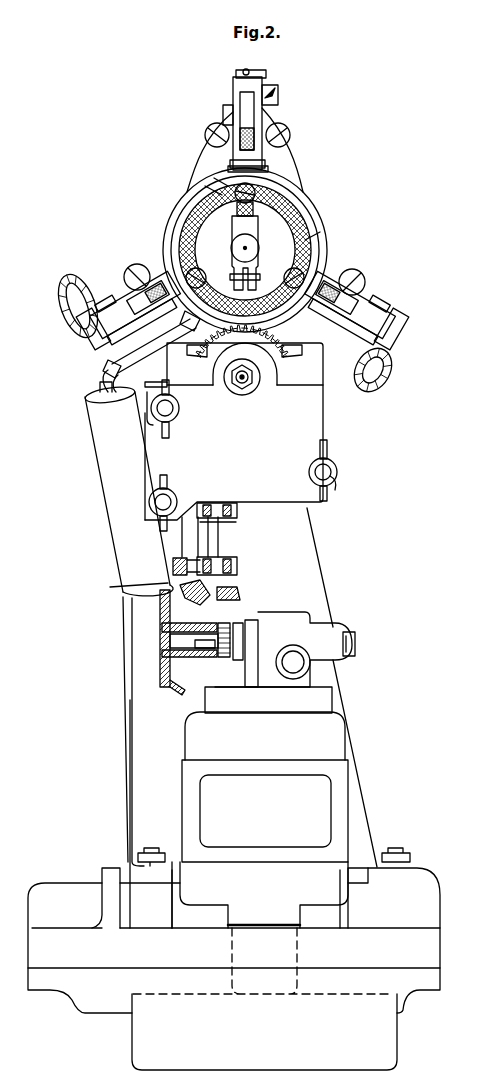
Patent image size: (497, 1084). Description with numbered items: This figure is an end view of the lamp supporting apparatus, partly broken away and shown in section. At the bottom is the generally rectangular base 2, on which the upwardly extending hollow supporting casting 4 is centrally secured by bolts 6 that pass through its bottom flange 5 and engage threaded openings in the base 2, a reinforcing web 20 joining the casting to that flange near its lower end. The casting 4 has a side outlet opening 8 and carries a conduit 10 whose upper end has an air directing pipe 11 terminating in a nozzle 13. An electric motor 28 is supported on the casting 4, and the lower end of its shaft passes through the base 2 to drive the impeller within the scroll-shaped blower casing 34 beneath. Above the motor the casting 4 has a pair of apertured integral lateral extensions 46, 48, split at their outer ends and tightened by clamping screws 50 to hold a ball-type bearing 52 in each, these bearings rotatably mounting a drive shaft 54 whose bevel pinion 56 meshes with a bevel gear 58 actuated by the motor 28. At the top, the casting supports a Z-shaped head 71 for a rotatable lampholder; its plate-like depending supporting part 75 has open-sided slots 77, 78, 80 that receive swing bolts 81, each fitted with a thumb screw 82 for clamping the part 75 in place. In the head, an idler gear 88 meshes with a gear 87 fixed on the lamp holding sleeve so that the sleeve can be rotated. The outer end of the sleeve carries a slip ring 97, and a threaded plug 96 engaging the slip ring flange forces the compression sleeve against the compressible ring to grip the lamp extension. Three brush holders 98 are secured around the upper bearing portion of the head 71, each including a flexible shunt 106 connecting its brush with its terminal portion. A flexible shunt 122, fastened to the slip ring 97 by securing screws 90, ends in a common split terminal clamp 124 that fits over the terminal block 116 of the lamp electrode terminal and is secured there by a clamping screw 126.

The base 2 is at (55, 888).
The hollow supporting casting 4 is at (337, 600).
The bottom flange 5 is at (125, 870).
The bolts 6 is at (157, 852).
The side outlet opening 8 is at (117, 589).
The conduit 10 is at (107, 487).
The air directing pipe 11 is at (148, 356).
The nozzle 13 is at (211, 302).
The reinforcing web 20 is at (128, 781).
The electric motor 28 is at (343, 788).
The scroll-shaped blower casing 34 is at (390, 1036).
The lateral extension 46 is at (230, 559).
The lateral extension 48 is at (222, 522).
The clamping screws 50 is at (242, 511).
The bearing 52 is at (180, 555).
The drive shaft 54 is at (215, 541).
The bevel pinion 56 is at (238, 596).
The bevel gear 58 is at (163, 610).
The head 71 is at (304, 153).
The depending supporting part 75 is at (308, 403).
The open-sided slot 77 is at (161, 423).
The open-sided slot 78 is at (150, 521).
The open-sided slot 80 is at (333, 481).
The swing bolts 81 is at (179, 408).
The thumb screw 82 is at (170, 428).
The gear 87 is at (316, 231).
The idler gear 88 is at (268, 346).
The securing screws 90 is at (262, 188).
The threaded plug 96 is at (285, 246).
The slip ring 97 is at (206, 186).
The brush holders 98 is at (254, 60).
The flexible shunt 106 is at (244, 74).
The terminal block 116 is at (240, 247).
The flexible shunts 122 is at (217, 179).
The common split terminal clamp 124 is at (262, 236).
The clamping screw 126 is at (262, 278).